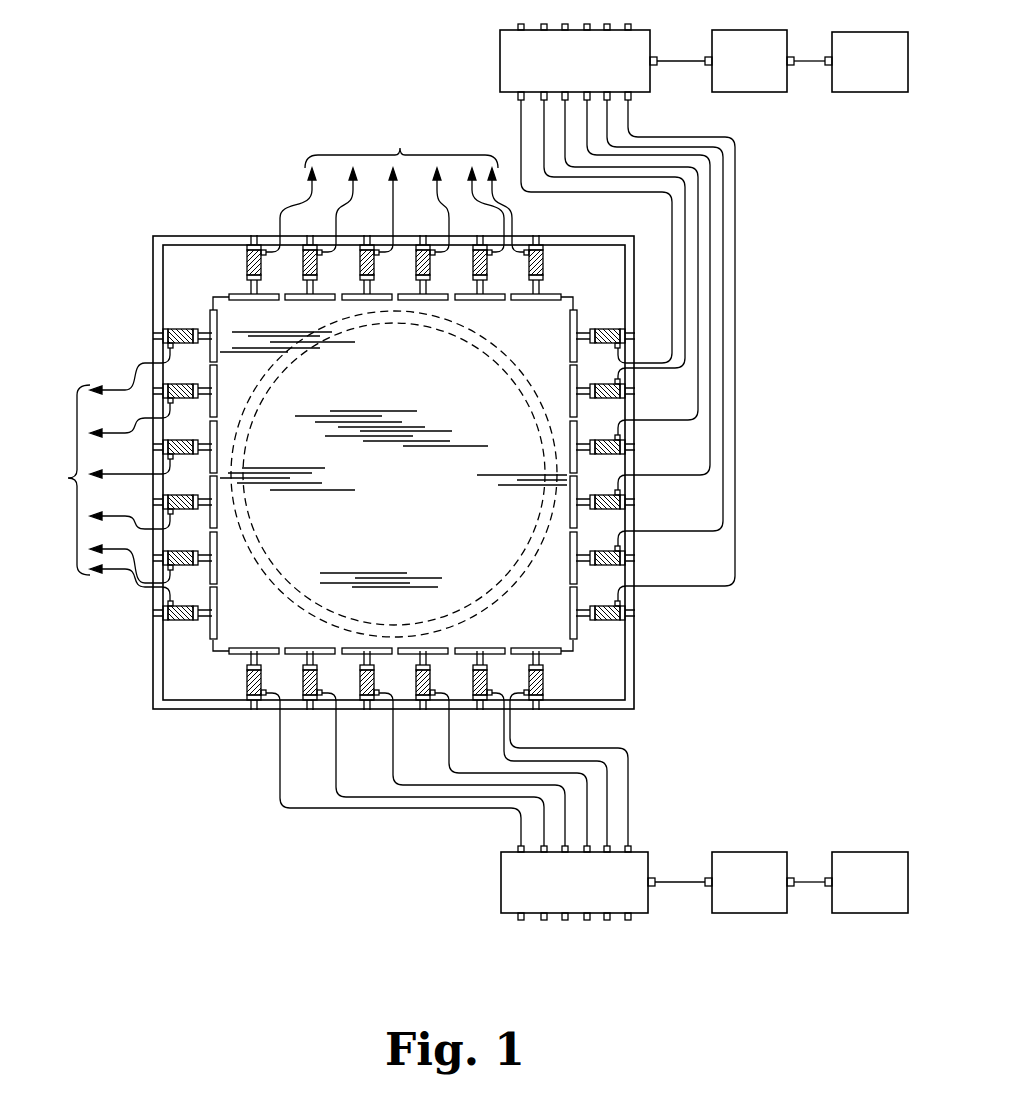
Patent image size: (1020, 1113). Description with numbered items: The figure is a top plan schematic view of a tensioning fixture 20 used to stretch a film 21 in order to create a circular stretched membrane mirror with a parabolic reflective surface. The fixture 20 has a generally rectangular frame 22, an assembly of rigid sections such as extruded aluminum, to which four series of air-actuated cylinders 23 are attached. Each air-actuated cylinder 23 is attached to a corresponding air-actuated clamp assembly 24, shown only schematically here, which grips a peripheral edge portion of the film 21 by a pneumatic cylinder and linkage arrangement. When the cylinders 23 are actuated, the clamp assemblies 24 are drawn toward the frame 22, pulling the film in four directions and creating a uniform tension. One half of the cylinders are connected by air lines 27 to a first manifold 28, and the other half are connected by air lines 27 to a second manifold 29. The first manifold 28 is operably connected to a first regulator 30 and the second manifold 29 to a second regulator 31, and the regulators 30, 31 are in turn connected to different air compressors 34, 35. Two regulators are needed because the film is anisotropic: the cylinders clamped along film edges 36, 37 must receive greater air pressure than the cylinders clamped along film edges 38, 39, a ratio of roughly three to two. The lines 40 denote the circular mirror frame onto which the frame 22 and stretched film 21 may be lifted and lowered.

The tensioning fixture 20 is at (226, 188).
The film 21 is at (418, 534).
The frame 22 is at (153, 700).
The air-actuated cylinder 23 is at (520, 245).
The air-actuated clamp assembly 24 is at (238, 296).
The air line 27 is at (302, 193).
The first manifold 28 is at (513, 898).
The second manifold 29 is at (500, 55).
The first regulator 30 is at (728, 907).
The second regulator 31 is at (757, 85).
The air compressor 34 is at (846, 907).
The air compressor 35 is at (872, 85).
The film edge 36 is at (573, 295).
The film edge 37 is at (214, 654).
The film edge 38 is at (207, 302).
The film edge 39 is at (573, 650).
The circular mirror frame lines 40 is at (492, 590).